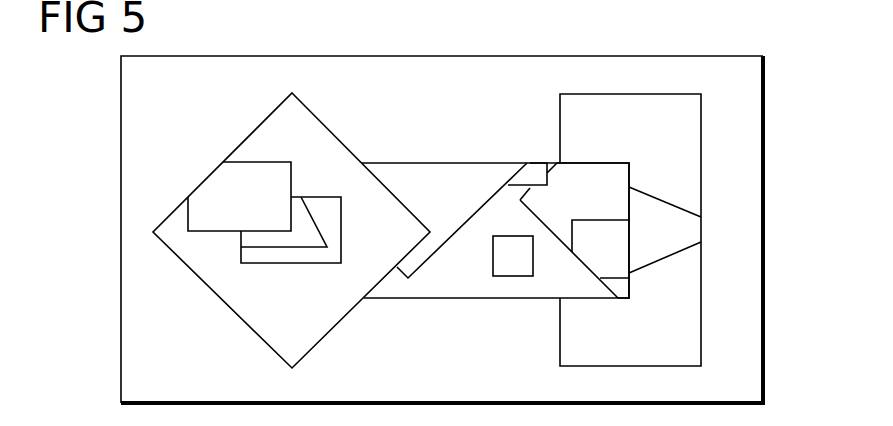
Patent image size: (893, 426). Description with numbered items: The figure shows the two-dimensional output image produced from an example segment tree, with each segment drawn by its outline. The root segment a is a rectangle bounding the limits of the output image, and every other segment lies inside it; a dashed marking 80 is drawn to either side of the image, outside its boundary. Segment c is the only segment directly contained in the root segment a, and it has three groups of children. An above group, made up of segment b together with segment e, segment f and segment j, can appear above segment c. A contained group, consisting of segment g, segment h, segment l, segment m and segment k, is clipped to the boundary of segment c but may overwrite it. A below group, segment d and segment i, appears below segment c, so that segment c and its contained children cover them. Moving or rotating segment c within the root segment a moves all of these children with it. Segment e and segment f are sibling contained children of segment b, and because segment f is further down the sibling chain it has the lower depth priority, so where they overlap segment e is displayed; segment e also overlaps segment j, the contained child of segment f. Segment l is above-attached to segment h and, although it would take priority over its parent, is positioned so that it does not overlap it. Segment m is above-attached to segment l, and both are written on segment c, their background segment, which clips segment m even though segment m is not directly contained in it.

The section line 80 is at (153, 205).
The root segment a is at (442, 229).
The segment b is at (291, 230).
The segment c is at (462, 227).
The segment d is at (630, 230).
The segment e is at (239, 196).
The segment f is at (291, 228).
The segment g is at (495, 228).
The segment h is at (574, 230).
The segment i is at (665, 230).
The segment j is at (284, 222).
The segment k is at (600, 249).
The segment l is at (513, 257).
The segment m is at (527, 171).